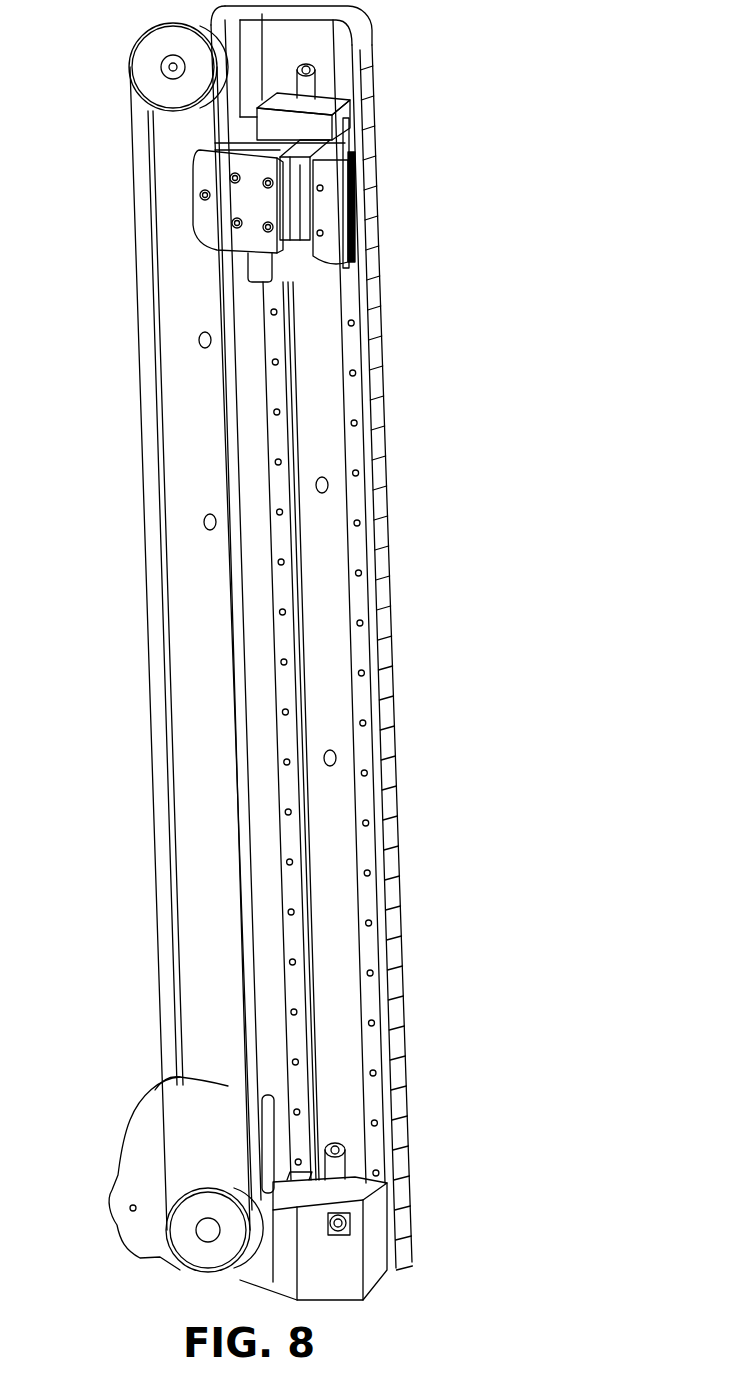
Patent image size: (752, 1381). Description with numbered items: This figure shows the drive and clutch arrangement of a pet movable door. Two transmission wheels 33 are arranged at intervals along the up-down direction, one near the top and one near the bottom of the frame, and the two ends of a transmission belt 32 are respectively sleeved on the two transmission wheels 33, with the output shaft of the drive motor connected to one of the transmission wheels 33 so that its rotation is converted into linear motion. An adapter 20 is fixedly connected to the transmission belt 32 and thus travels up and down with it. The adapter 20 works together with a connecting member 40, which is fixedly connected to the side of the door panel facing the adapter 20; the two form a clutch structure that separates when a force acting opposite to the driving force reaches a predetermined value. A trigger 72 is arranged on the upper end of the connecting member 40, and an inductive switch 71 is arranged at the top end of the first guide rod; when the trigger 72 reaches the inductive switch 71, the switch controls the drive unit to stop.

The adapter 20 is at (200, 212).
The transmission belt 32 is at (168, 997).
The transmission wheel 33 is at (147, 60).
The connecting member 40 is at (340, 236).
The inductive switch 71 is at (327, 107).
The trigger 72 is at (348, 153).